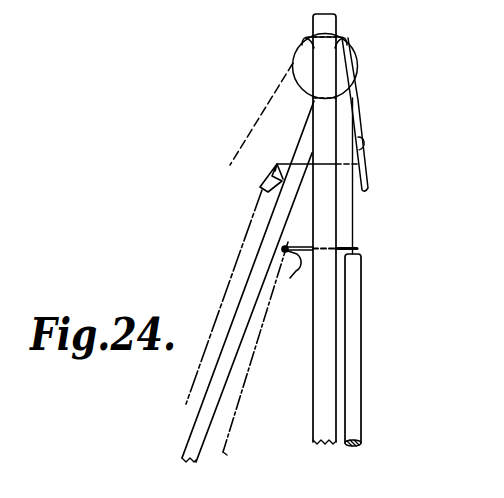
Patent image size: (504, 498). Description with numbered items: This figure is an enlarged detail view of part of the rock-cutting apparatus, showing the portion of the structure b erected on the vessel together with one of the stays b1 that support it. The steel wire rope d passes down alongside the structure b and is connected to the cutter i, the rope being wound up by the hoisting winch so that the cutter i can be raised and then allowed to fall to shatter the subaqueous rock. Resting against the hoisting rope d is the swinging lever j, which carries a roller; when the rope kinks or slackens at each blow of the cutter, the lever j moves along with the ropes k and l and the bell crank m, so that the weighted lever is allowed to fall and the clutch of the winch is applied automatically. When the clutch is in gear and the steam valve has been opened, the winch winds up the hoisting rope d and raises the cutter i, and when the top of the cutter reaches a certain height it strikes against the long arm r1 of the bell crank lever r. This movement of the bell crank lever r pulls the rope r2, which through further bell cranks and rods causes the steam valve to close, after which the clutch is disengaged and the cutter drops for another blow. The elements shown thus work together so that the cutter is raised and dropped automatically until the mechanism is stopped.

The structure b is at (322, 341).
The stays b1 is at (203, 389).
The steel wire rope d is at (262, 119).
The cutter i is at (359, 388).
The swinging lever j is at (352, 123).
The rope k is at (318, 170).
The rope l is at (244, 230).
The bell crank m is at (266, 177).
The bell crank lever r is at (290, 278).
The long arm r1 is at (322, 259).
The rope r2 is at (225, 453).